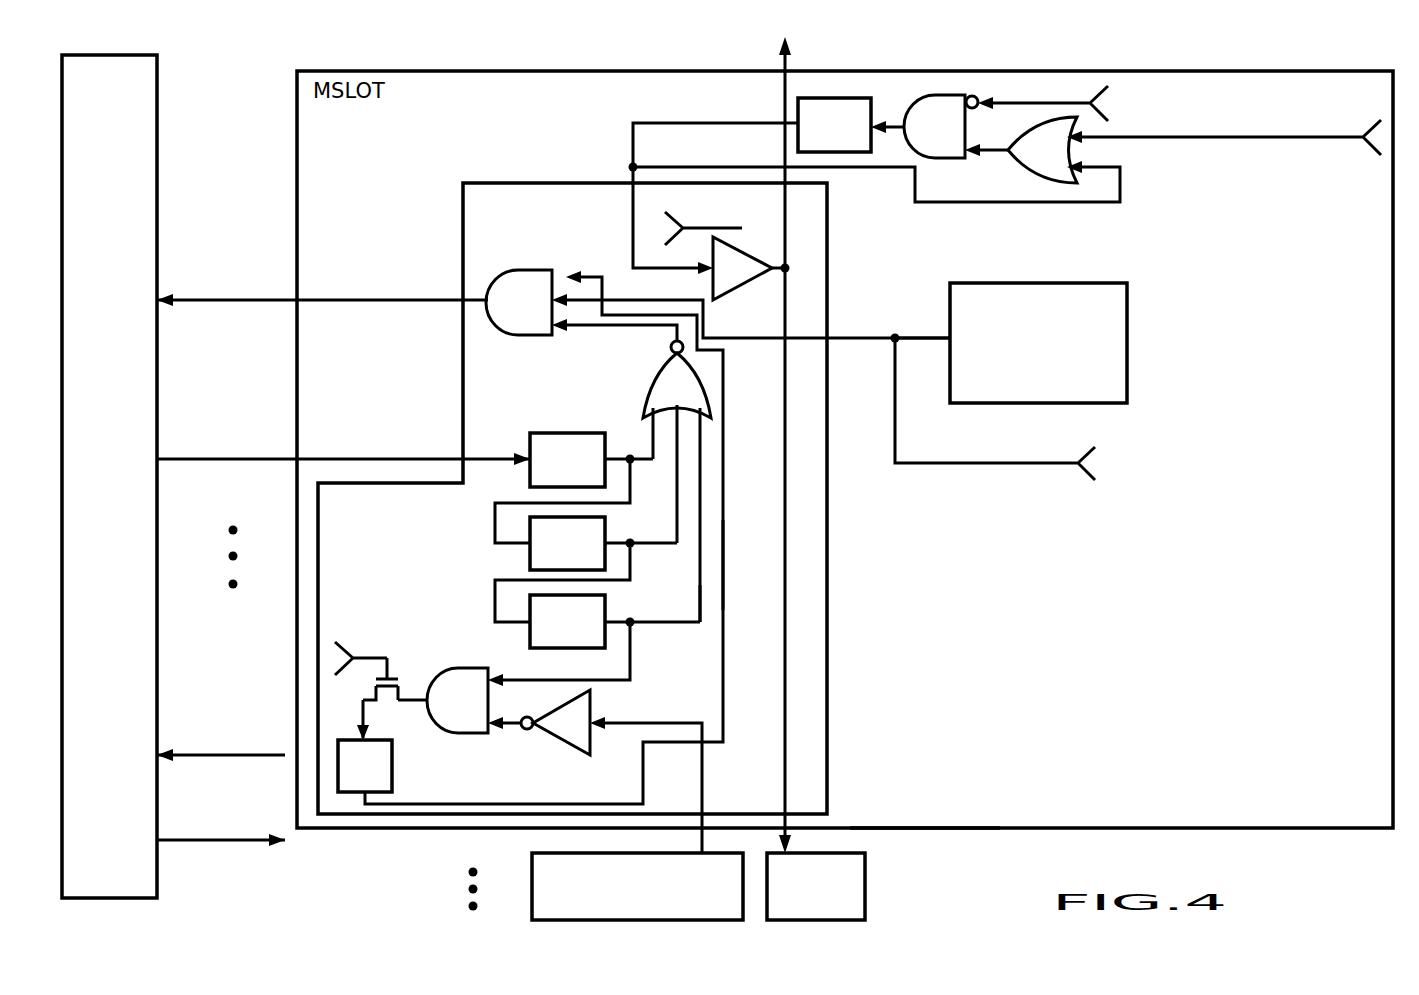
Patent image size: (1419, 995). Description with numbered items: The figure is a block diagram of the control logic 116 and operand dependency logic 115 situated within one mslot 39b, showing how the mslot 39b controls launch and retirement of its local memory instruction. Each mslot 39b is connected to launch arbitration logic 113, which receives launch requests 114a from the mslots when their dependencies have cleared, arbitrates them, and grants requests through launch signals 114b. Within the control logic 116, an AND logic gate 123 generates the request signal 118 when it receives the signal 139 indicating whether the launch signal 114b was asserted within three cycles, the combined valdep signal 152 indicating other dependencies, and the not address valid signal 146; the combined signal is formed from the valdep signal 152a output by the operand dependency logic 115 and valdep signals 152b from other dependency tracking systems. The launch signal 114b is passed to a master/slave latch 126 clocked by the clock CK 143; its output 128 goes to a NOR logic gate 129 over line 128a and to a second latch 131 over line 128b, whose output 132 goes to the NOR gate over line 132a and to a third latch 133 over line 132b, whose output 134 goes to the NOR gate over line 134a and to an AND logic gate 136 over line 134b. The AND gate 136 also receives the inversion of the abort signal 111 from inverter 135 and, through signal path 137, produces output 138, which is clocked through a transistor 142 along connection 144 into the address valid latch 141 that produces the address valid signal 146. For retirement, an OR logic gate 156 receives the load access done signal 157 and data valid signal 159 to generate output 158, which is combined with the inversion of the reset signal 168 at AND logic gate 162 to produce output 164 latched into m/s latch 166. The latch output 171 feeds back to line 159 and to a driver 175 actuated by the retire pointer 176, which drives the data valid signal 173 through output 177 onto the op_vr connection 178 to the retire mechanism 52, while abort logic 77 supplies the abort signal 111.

The launch arbitration logic 113 is at (90, 856).
The launch request 114a is at (234, 302).
The launch signal 114b is at (233, 460).
The operand dependency logic 115 is at (1127, 325).
The control logic 116 is at (827, 745).
The request signal 118 is at (488, 455).
The AND logic gate 123 is at (495, 268).
The master/slave latch 126 is at (561, 433).
The output of latch 126 128 is at (621, 455).
The line 128a is at (655, 448).
The line 128b is at (495, 526).
The NOR logic gate 129 is at (655, 379).
The master/slave latch 131 is at (613, 517).
The output of latch 131 132 is at (636, 558).
The line 132a is at (678, 520).
The line 132b is at (495, 605).
The master/slave latch 133 is at (612, 615).
The output of latch 133 134 is at (637, 632).
The line 134a is at (634, 628).
The line 134b is at (632, 668).
The inverter 135 is at (581, 757).
The AND logic gate 136 is at (462, 735).
The inverter output line 137 is at (521, 716).
The output 138 is at (416, 698).
The signal 139 is at (570, 331).
The address valid latch 141 is at (360, 797).
The transistor 142 is at (396, 720).
The clock CK 143 is at (387, 655).
The line to address valid latch 144 is at (360, 703).
The address valid signal 146 is at (724, 566).
The combined valdep signal 152 is at (870, 339).
The valdep signal 152a is at (925, 336).
The valdep signals 152b is at (1012, 465).
The OR logic gate 156 is at (1035, 187).
The load access done signal 157 is at (1282, 141).
The output 158 is at (993, 157).
The data valid signal 159 is at (1123, 193).
The AND logic gate 162 is at (921, 95).
The output 164 is at (891, 140).
The master/slave latch 166 is at (834, 98).
The reset signal 168 is at (1097, 95).
The output of latch 166 171 is at (633, 136).
The data valid signal 173 is at (633, 241).
The driver 175 is at (746, 290).
The retire pointer 176 is at (742, 228).
The OP_VR output line 177 is at (786, 271).
The op_vr connection 178 is at (702, 606).
The abort signal 111 is at (703, 750).
The abort logic 77 is at (702, 909).
The retire mechanism 52 is at (830, 911).
The mslot 39b is at (908, 832).